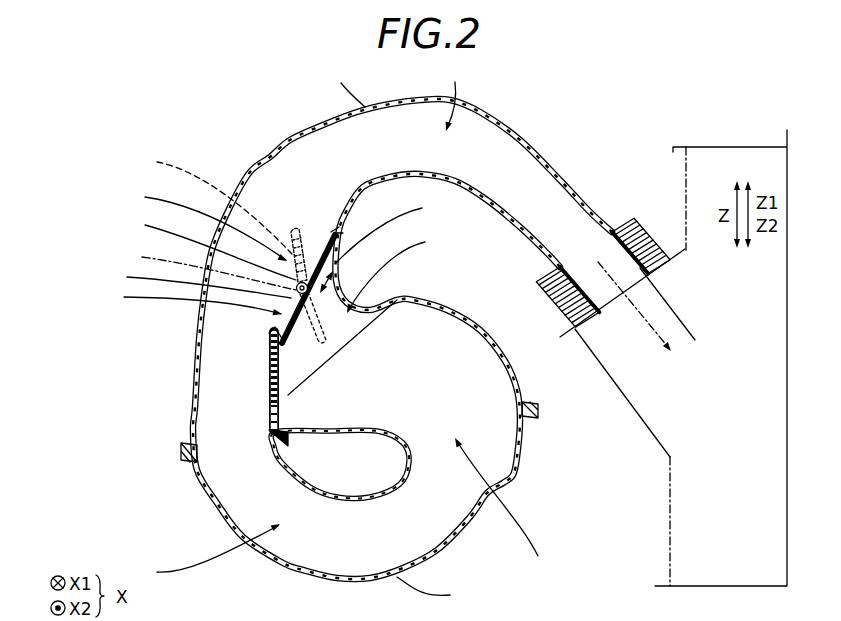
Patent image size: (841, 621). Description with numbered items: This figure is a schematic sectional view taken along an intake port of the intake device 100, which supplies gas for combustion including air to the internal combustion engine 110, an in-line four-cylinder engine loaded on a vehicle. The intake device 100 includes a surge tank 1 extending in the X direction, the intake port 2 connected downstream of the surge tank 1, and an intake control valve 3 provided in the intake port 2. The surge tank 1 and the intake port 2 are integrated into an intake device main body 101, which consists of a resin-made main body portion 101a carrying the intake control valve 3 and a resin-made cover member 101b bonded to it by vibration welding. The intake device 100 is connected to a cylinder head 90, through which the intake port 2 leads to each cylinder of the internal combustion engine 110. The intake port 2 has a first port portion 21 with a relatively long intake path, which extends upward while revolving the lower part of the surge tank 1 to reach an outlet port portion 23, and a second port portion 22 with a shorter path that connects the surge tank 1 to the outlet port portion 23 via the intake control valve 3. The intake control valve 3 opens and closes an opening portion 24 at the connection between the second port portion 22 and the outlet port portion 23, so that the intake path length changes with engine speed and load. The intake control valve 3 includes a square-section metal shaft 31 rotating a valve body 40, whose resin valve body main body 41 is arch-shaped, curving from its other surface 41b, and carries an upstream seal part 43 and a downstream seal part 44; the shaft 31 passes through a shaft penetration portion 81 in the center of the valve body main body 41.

The surge tank 1 is at (500, 507).
The intake port 2 is at (375, 333).
The intake control valve 3 is at (201, 233).
The first port portion 21 is at (206, 553).
The second port portion 22 is at (398, 272).
The outlet port portion 23 is at (457, 96).
The opening portion 24 is at (304, 346).
The shaft 31 is at (209, 247).
The valve body 40 is at (204, 224).
The valve body main body 41 is at (326, 221).
The other surface 41b is at (396, 230).
The seal part 43 is at (270, 361).
The seal part 44 is at (332, 236).
The shaft penetration portion 81 is at (197, 282).
The cylinder head 90 is at (672, 255).
The intake device 100 is at (673, 325).
The intake device main body 101 is at (541, 152).
The main body portion 101a is at (446, 591).
The cover member 101b is at (347, 85).
The internal combustion engine 110 is at (753, 130).